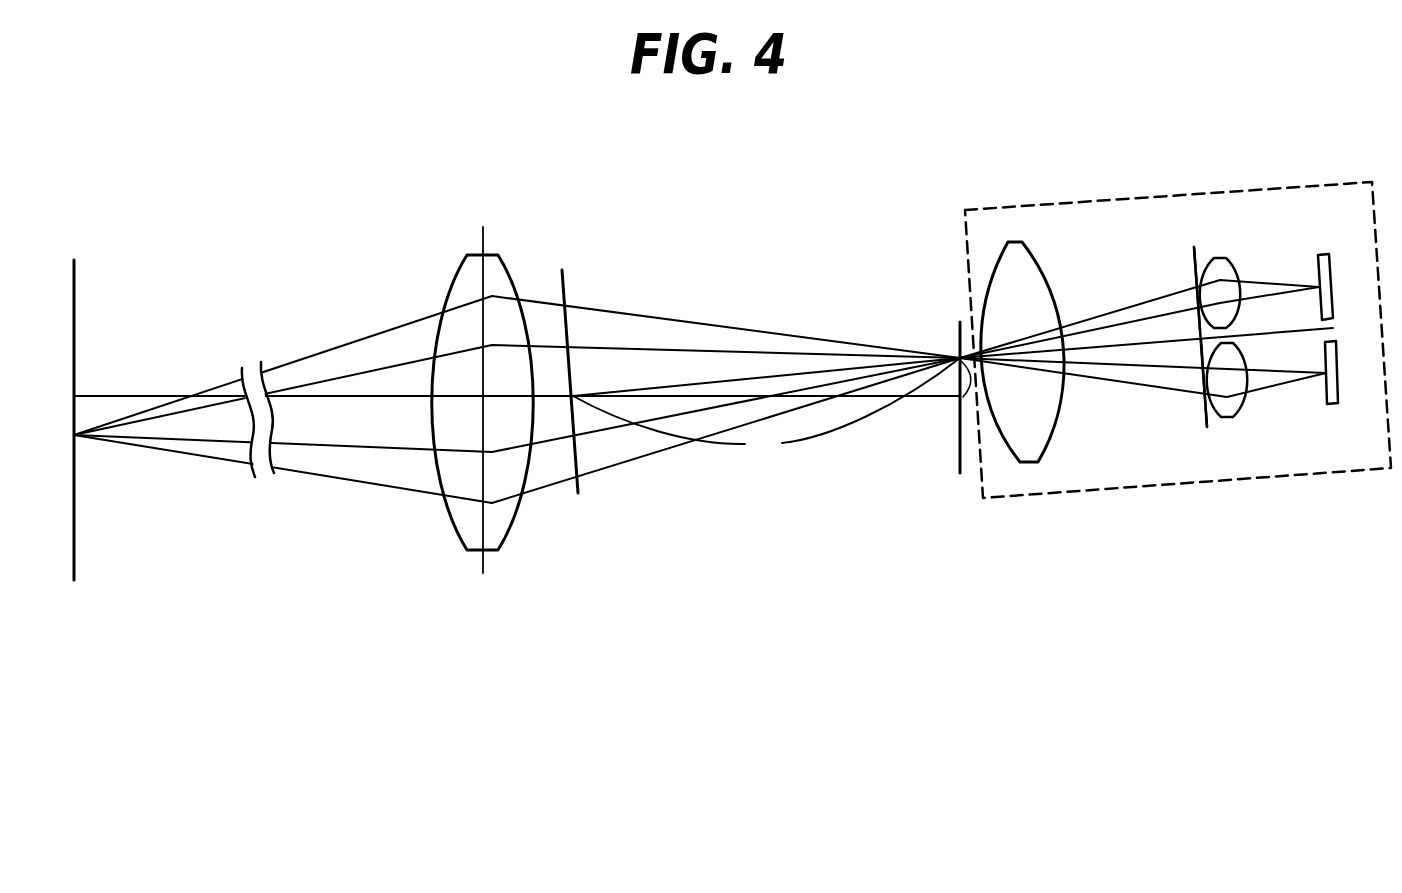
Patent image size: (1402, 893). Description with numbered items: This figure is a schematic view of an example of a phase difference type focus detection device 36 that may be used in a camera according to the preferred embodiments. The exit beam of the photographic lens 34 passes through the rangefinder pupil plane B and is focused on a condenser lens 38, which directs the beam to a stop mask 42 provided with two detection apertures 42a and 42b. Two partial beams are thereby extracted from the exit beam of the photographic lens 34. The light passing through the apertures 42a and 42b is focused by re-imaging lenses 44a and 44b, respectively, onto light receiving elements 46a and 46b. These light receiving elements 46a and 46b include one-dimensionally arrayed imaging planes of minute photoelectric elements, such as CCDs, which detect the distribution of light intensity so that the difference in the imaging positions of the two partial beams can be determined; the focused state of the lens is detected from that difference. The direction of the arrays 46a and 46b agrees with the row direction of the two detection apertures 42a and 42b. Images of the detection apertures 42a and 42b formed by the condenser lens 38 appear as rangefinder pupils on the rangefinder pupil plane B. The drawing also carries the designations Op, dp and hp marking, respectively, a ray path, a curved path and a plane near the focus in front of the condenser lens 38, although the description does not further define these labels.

The photographic lens 34 is at (470, 292).
The focus detection device 36 is at (975, 206).
The condenser lens 38 is at (1018, 277).
The stop mask 42 is at (1195, 268).
The detection aperture 42a is at (1202, 303).
The detection aperture 42b is at (1205, 377).
The re-imaging lens 44a is at (1220, 270).
The re-imaging lens 44b is at (1227, 412).
The light receiving element 46a is at (1320, 285).
The light receiving element 46b is at (1337, 393).
The rangefinder pupil plane B is at (580, 520).
The optical path Op is at (727, 391).
The defocus curve dp is at (766, 414).
The predetermined focal plane hp is at (958, 427).